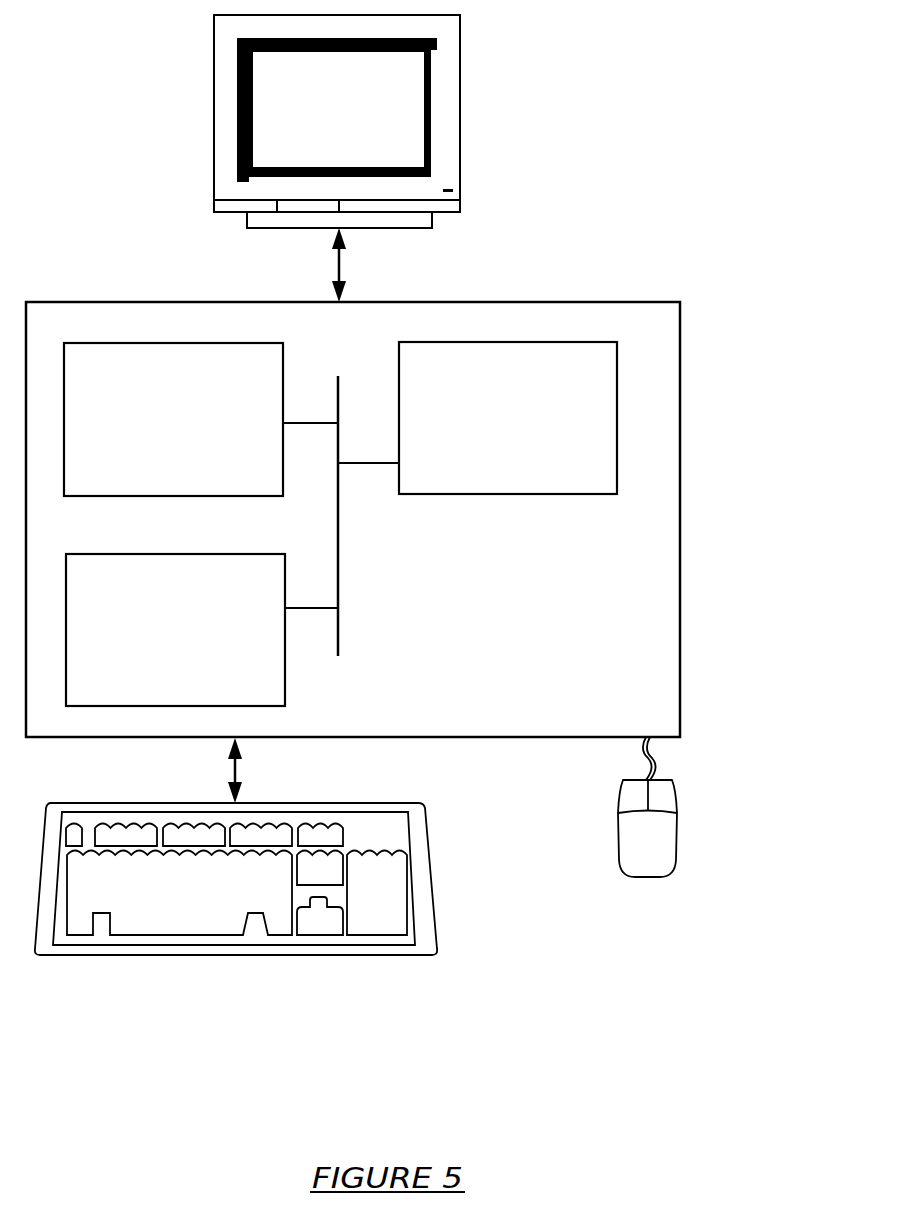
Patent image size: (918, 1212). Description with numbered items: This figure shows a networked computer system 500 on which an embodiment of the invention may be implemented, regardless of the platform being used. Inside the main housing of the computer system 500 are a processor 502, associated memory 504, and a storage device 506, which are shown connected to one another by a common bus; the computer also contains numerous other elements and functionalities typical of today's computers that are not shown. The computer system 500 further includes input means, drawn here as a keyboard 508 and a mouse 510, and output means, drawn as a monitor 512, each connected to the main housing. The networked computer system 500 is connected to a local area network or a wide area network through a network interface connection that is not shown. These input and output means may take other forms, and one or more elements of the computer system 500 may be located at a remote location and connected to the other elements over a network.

The networked computer system 500 is at (696, 161).
The processor 502 is at (546, 429).
The memory 504 is at (153, 429).
The storage device 506 is at (152, 642).
The keyboard 508 is at (148, 917).
The mouse 510 is at (627, 850).
The monitor 512 is at (317, 124).